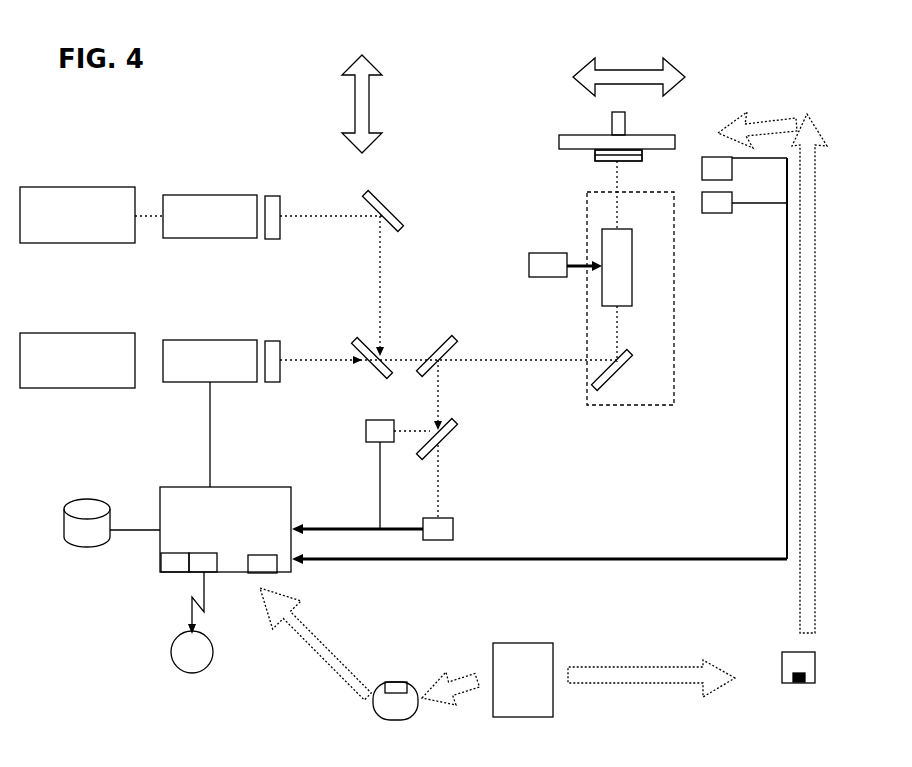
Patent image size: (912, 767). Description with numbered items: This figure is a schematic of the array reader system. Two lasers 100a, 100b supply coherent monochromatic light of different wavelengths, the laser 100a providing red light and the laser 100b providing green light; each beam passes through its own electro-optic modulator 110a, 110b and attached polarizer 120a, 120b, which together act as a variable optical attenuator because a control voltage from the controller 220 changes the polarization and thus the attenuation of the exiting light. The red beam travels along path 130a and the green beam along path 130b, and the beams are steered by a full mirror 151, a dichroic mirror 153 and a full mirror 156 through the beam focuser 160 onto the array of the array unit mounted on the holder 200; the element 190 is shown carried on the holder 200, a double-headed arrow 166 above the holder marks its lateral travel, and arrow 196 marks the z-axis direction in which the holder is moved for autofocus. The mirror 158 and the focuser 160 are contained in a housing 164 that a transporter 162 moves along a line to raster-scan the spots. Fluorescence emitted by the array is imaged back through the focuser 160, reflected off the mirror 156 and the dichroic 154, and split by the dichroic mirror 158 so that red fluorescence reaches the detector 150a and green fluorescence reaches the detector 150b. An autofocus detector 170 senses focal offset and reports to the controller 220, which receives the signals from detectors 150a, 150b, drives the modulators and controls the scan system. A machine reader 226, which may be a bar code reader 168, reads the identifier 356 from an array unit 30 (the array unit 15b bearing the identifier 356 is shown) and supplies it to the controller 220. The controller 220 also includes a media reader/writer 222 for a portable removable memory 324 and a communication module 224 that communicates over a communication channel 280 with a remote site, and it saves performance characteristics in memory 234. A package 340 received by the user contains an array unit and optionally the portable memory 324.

The laser 100a is at (77, 351).
The laser 100b is at (77, 206).
The electro-optic modulator 110a is at (193, 339).
The electro-optic modulator 110b is at (193, 194).
The polarizer 120a is at (278, 341).
The polarizer 120b is at (277, 196).
The full mirror 151 is at (387, 207).
The dichroic mirror 153 is at (390, 352).
The dichroic mirror 154 is at (450, 353).
The full mirror 156 is at (615, 377).
The dichroic mirror 158 is at (452, 438).
The detector 150a is at (368, 452).
The detector 150b is at (438, 540).
The beam focuser 160 is at (631, 267).
The transporter 162 is at (530, 258).
The housing 164 is at (674, 307).
The lateral stage motion 166 is at (632, 62).
The bar code reader 168 is at (735, 170).
The autofocus detector 170 is at (715, 213).
The workpiece 190 is at (612, 120).
The z-axis direction 196 is at (382, 90).
The holder 200 is at (558, 143).
The array unit 30 is at (584, 158).
The beam path 130a is at (650, 160).
The beam path 130b is at (650, 160).
The controller 220 is at (207, 541).
The media reader/writer 222 is at (277, 573).
The communication module 224 is at (195, 572).
The machine reader 226 is at (160, 567).
The memory 234 is at (69, 541).
The communication channel 280 is at (174, 661).
The portable removable memory 324 is at (388, 682).
The package 340 is at (505, 689).
The card 15b is at (783, 663).
The identifier 356 is at (798, 683).